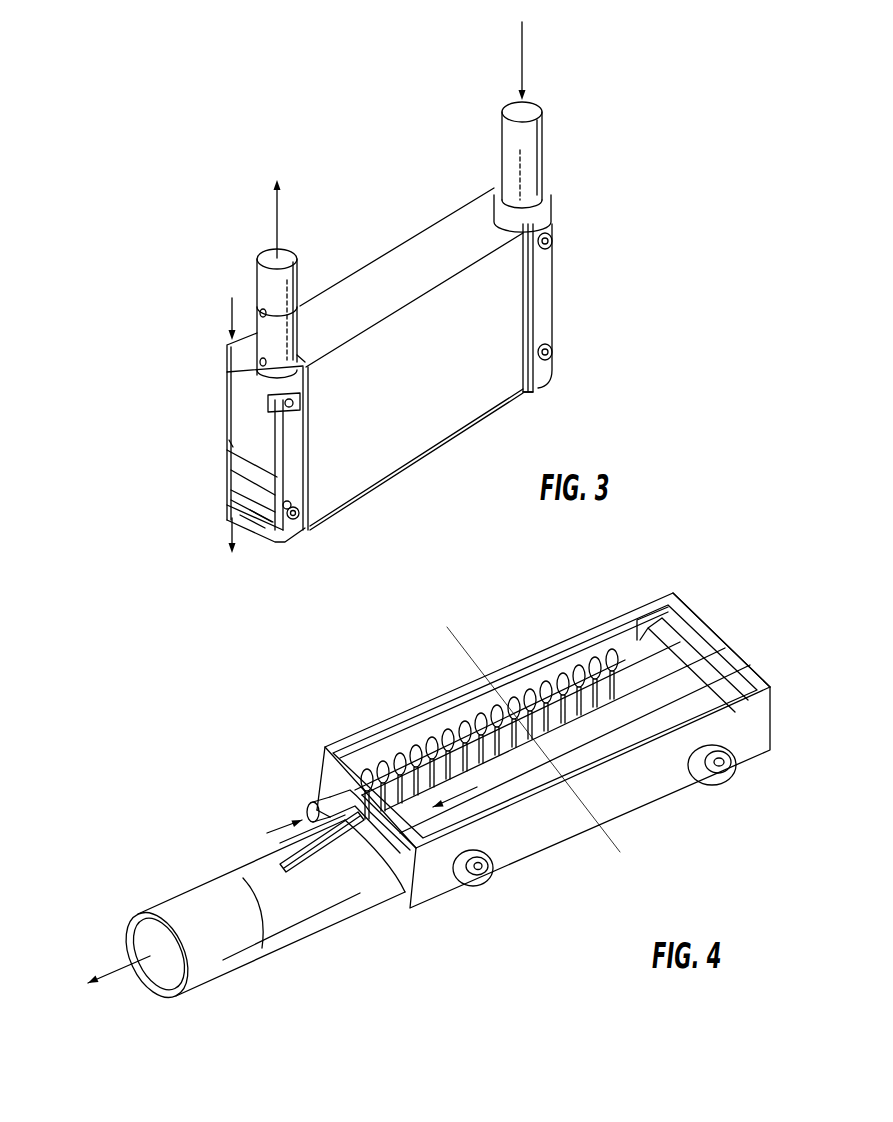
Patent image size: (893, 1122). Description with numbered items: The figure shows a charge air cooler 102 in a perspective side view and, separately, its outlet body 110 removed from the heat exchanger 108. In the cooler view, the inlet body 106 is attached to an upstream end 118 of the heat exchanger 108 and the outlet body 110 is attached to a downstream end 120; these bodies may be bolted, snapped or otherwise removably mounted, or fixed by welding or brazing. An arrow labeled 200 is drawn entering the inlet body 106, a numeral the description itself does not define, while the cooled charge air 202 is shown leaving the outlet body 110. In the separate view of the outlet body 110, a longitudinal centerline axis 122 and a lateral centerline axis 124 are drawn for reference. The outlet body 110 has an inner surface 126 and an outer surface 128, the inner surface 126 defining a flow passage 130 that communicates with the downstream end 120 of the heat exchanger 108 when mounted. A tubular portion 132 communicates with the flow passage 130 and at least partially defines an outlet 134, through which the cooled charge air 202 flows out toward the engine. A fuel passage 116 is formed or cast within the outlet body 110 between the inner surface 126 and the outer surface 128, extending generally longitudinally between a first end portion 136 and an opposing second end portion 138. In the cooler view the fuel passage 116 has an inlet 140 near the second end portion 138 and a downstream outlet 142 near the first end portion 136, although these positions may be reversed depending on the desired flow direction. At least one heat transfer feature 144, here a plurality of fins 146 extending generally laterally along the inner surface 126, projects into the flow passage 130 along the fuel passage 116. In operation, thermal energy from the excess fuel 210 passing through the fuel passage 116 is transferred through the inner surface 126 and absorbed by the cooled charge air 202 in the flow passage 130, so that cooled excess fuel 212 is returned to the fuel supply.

In FIG. 3, the charge air cooler 102 is at (592, 200).
In FIG. 3, the inlet body 106 is at (558, 295).
In FIG. 3, the heat exchanger 108 is at (405, 256).
In FIG. 3, the outlet body 110 is at (240, 424).
In FIG. 4, the outlet body 110 is at (708, 560).
In FIG. 3, the fuel passage 116 is at (230, 503).
In FIG. 4, the fuel passage 116 is at (440, 735).
In FIG. 3, the upstream end 118 is at (531, 408).
In FIG. 3, the downstream end 120 is at (320, 545).
In FIG. 4, the longitudinal centerline axis 122 is at (740, 633).
In FIG. 4, the lateral centerline axis 124 is at (452, 632).
In FIG. 4, the inner surface 126 is at (630, 717).
In FIG. 3, the outer surface 128 is at (237, 383).
In FIG. 4, the outer surface 128 is at (765, 716).
In FIG. 4, the flow passage 130 is at (471, 794).
In FIG. 4, the tubular portion 132 is at (292, 966).
In FIG. 4, the outlet 134 is at (140, 952).
In FIG. 3, the first end portion 136 is at (268, 548).
In FIG. 4, the first end portion 136 is at (766, 660).
In FIG. 3, the second end portion 138 is at (253, 340).
In FIG. 4, the second end portion 138 is at (405, 920).
In FIG. 3, the inlet 140 is at (240, 347).
In FIG. 3, the outlet 142 is at (210, 518).
In FIG. 4, the heat transfer feature 144 is at (568, 658).
In FIG. 4, the fins 146 is at (598, 662).
In FIG. 3, the downward direction 200 is at (525, 70).
In FIG. 3, the cooled charge air 202 is at (281, 213).
In FIG. 4, the cooled charge air 202 is at (517, 764).
In FIG. 3, the excess fuel 210 is at (226, 318).
In FIG. 4, the excess fuel 210 is at (296, 818).
In FIG. 3, the cooled excess fuel 212 is at (226, 534).